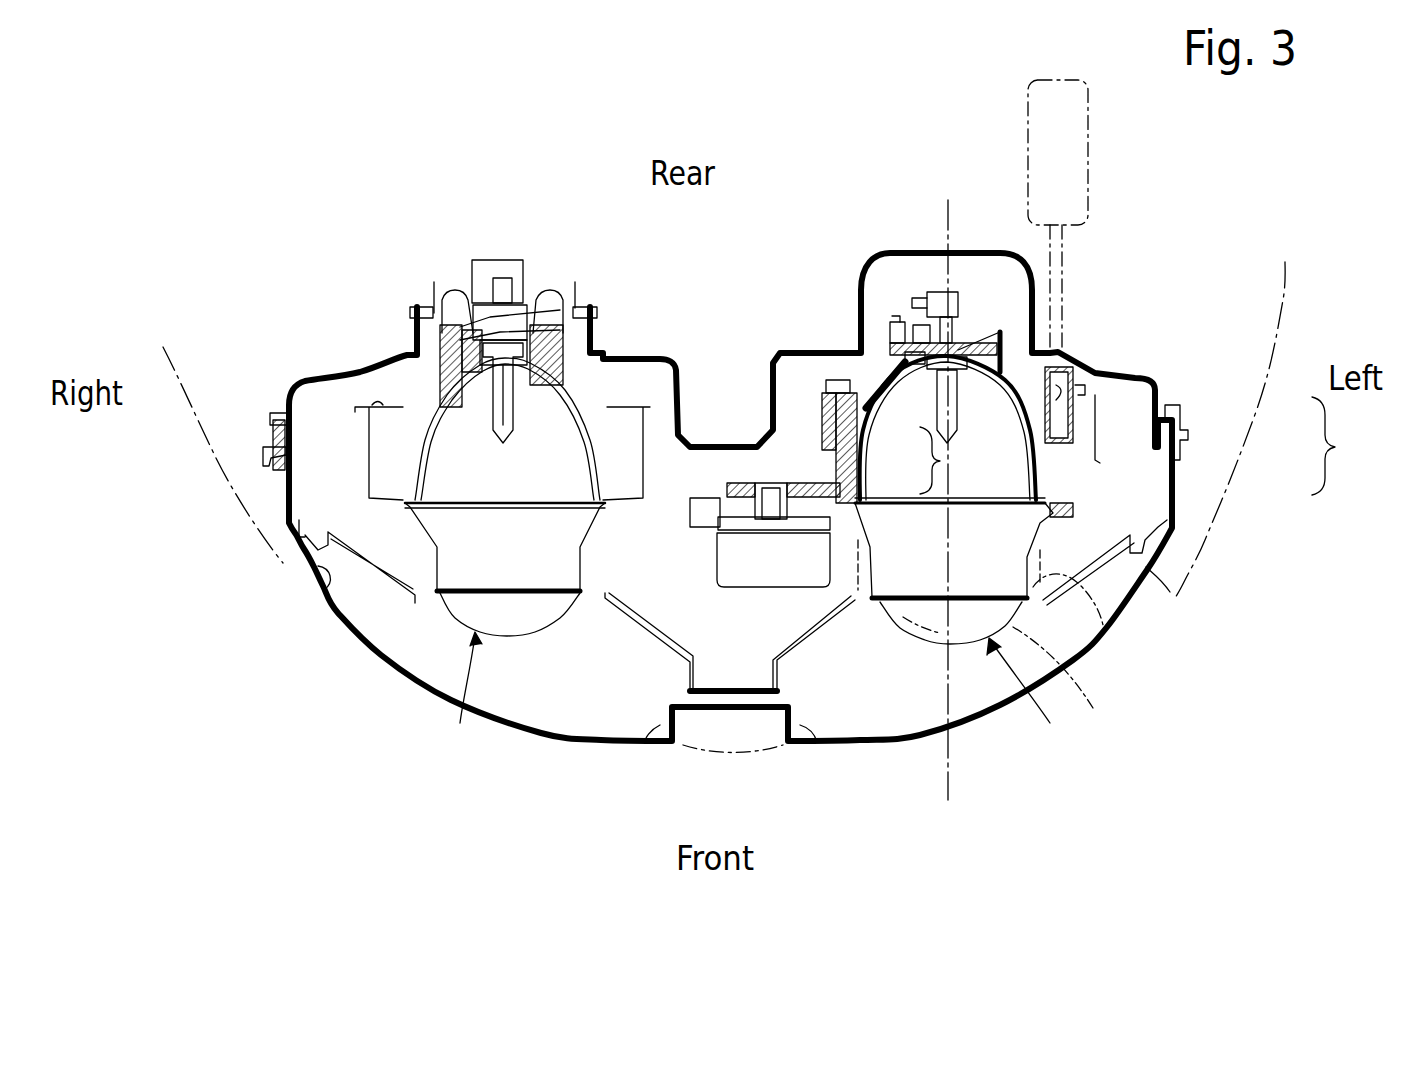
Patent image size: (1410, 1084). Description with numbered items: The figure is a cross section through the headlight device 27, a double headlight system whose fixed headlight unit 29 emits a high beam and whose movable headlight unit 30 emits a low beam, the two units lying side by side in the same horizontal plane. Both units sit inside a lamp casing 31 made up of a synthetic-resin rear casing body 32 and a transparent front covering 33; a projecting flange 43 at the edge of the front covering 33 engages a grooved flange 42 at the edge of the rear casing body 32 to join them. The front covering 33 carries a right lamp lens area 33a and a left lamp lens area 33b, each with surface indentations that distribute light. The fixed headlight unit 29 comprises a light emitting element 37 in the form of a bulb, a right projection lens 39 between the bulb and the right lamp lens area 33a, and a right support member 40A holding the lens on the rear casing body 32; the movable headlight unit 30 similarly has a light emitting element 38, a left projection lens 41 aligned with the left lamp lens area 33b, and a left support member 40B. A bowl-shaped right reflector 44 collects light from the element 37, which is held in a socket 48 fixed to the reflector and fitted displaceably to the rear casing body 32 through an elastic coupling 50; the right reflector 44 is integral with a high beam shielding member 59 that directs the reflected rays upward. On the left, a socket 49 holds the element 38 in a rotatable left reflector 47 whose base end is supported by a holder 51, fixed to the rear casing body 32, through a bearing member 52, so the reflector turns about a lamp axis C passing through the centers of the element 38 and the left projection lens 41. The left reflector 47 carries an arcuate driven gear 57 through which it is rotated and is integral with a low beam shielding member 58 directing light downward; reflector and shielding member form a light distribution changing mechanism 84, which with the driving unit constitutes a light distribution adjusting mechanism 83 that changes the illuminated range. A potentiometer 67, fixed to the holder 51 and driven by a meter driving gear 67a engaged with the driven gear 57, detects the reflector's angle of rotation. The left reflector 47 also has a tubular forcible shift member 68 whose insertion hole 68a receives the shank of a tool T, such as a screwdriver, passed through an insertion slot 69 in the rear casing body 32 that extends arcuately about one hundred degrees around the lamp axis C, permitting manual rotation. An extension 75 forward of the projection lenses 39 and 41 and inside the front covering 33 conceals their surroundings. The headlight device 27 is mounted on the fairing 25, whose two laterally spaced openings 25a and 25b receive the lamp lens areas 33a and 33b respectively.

The fairing 25 is at (204, 437).
The opening 25a is at (320, 597).
The opening 25b is at (793, 722).
The headlight device 27 is at (722, 443).
The fixed headlight unit 29 is at (456, 698).
The movable headlight unit 30 is at (1031, 698).
The lamp casing 31 is at (1338, 446).
The rear casing body 32 is at (1165, 398).
The front covering 33 is at (1177, 508).
The right lamp lens area 33a is at (543, 737).
The left lamp lens area 33b is at (918, 740).
The light emitting element 37 is at (510, 410).
The light emitting element 38 is at (953, 407).
The right projection lens 39 is at (513, 623).
The right support member 40A is at (590, 535).
The left support member 40B is at (1027, 523).
The left projection lens 41 is at (918, 617).
The grooved flange 42 is at (272, 420).
The projecting flange 43 is at (267, 447).
The right reflector 44 is at (423, 447).
The left reflector 47 is at (948, 431).
The socket 48 is at (502, 313).
The socket 49 is at (957, 343).
The elastic coupling 50 is at (453, 290).
The holder 51 is at (870, 388).
The bearing member 52 is at (887, 360).
The driven gear 57 is at (827, 497).
The low beam shielding member 58 is at (948, 428).
The high beam shielding member 59 is at (502, 508).
The potentiometer 67 is at (760, 570).
The meter driving gear 67a is at (738, 485).
The forcible shift member 68 is at (1077, 390).
The insertion hole 68a is at (1075, 372).
The insertion slot 69 is at (1057, 340).
The extension 75 is at (393, 583).
The light distribution adjusting mechanism 83 is at (985, 492).
The light distribution changing mechanism 84 is at (957, 500).
The lamp axis C is at (957, 750).
The tool T is at (1087, 177).